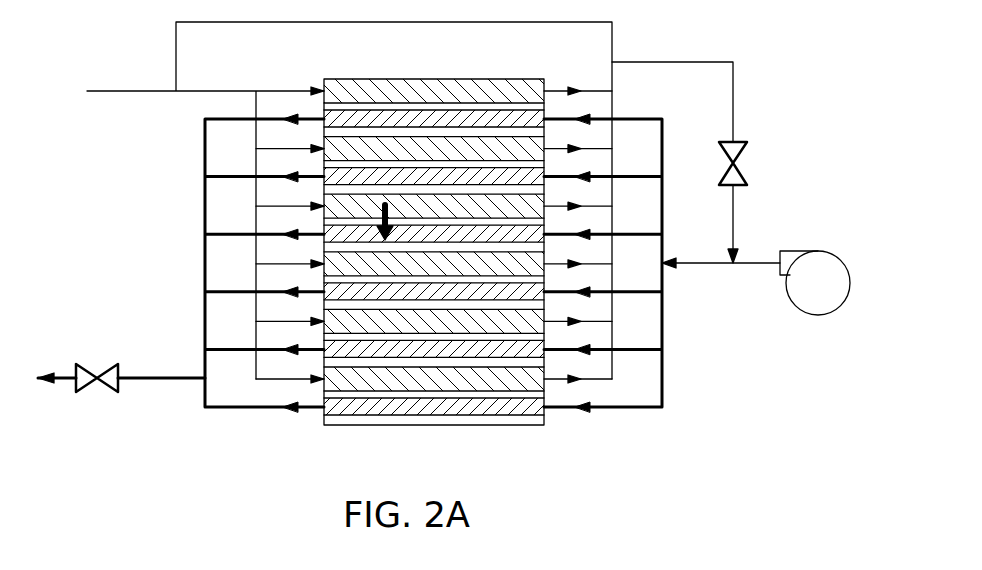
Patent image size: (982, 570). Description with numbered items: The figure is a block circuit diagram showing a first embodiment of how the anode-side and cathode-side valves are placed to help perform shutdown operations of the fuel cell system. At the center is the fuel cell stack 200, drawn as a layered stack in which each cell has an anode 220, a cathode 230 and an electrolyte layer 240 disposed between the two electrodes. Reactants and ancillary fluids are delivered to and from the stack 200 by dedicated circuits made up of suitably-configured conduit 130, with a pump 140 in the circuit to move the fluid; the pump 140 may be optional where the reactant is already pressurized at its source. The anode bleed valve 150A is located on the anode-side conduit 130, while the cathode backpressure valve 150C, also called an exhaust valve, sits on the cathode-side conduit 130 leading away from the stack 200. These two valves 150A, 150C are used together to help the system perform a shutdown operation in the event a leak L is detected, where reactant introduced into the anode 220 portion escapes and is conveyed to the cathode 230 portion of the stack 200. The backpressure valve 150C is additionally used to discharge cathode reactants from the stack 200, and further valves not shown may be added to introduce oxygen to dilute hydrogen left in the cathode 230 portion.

The conduit 130 is at (108, 91).
The pump 140 is at (817, 317).
The anode bleed valve 150A is at (740, 154).
The cathode backpressure valve 150C is at (103, 393).
The fuel cell stack 200 is at (578, 437).
The anode 220 is at (400, 93).
The cathode 230 is at (497, 117).
The electrolyte layer 240 is at (443, 107).
The leak L is at (385, 205).